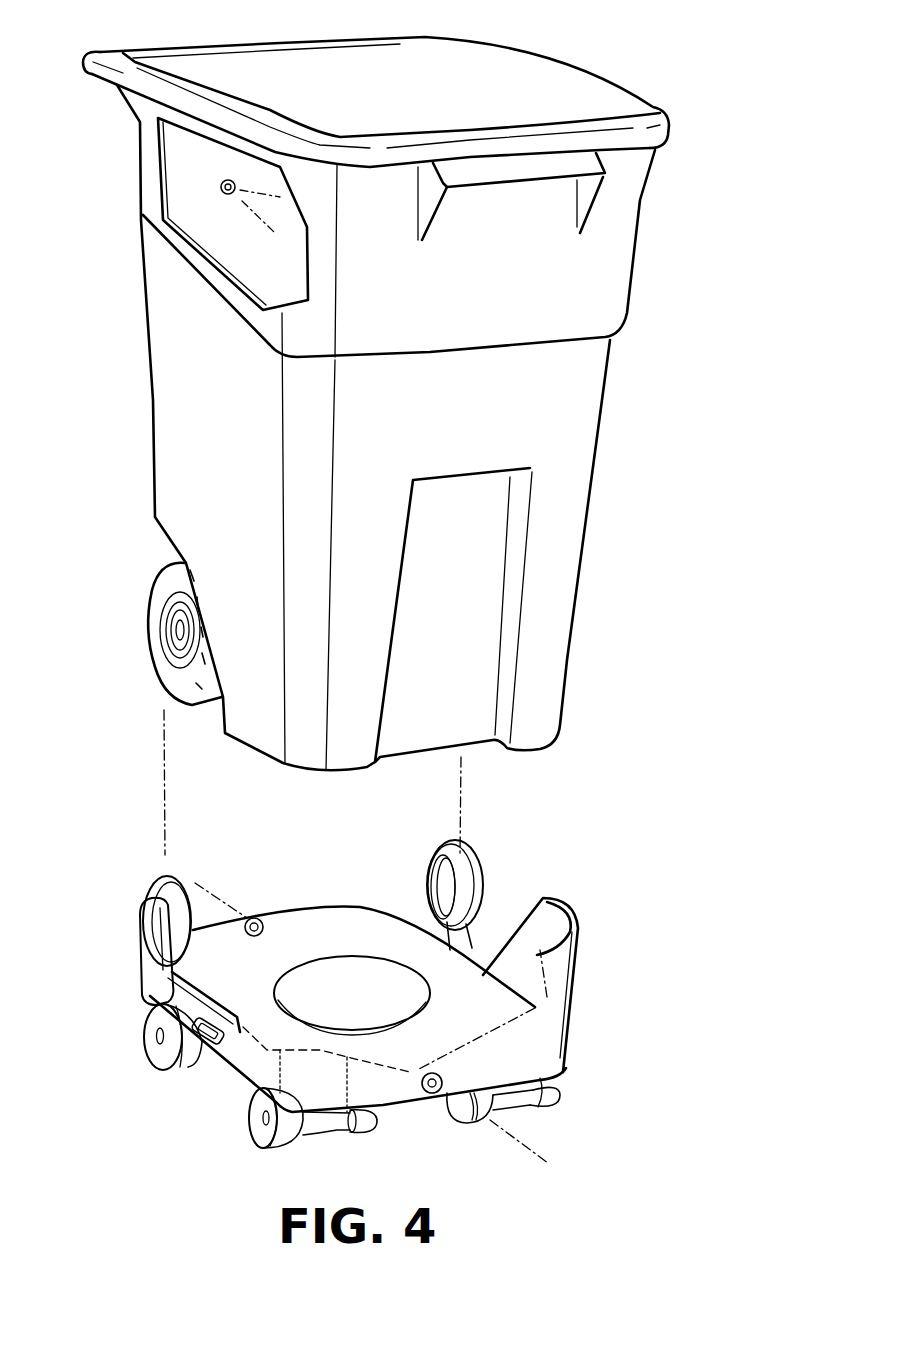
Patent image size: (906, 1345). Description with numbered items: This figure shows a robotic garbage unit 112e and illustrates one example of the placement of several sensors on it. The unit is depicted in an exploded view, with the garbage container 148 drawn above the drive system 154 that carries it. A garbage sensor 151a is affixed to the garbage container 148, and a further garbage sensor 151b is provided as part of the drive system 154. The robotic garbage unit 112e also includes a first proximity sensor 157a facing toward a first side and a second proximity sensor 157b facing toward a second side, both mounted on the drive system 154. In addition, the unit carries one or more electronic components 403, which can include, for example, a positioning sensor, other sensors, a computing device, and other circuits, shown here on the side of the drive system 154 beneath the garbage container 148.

The robotic garbage unit 112e is at (683, 60).
The garbage container 148 is at (617, 272).
The garbage sensor 151a is at (224, 196).
The garbage sensor 151b is at (336, 983).
The drive system 154 is at (553, 1095).
The first proximity sensor 157a is at (264, 930).
The second proximity sensor 157b is at (442, 1072).
The electronic components 403 is at (223, 1043).